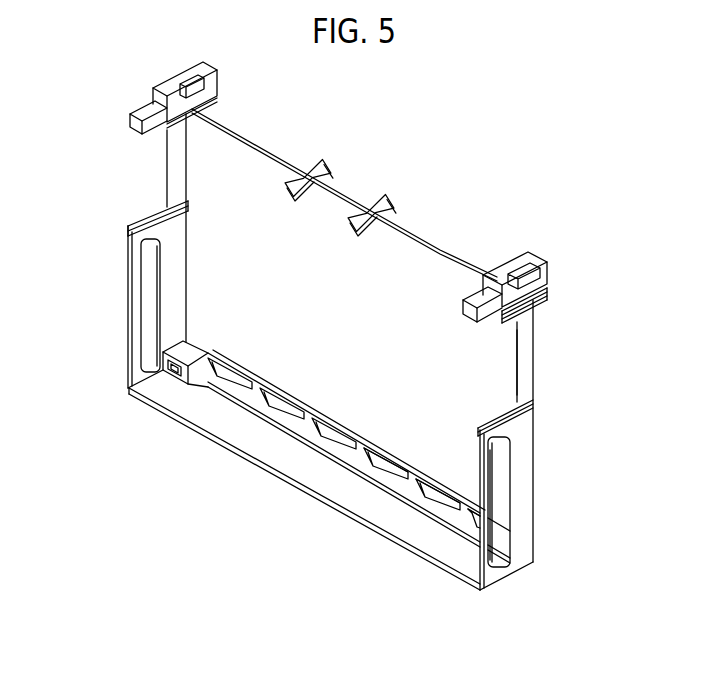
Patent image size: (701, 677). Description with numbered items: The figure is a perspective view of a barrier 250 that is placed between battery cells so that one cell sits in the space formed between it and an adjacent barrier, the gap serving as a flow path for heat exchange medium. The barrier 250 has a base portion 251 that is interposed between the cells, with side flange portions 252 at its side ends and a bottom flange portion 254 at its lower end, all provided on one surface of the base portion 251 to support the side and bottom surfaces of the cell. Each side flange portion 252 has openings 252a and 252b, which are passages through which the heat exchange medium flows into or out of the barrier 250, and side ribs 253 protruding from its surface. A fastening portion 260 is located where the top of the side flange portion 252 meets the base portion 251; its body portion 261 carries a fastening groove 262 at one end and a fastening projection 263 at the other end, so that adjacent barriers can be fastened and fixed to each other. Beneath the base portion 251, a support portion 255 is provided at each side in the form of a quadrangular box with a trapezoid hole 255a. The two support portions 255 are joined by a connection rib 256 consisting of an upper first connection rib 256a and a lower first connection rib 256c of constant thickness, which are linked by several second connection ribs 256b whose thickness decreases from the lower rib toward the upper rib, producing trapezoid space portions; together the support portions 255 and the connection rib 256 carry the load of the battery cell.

The barrier 250 is at (467, 170).
The base portion 251 is at (362, 415).
The side flange portion 252 is at (123, 305).
The opening 252a is at (499, 462).
The opening 252b is at (503, 369).
The side rib 253 is at (549, 296).
The bottom flange portion 254 is at (250, 437).
The support portion 255 is at (175, 347).
The hole 255a is at (177, 368).
The connection rib 256 is at (430, 652).
The upper first connection rib 256a is at (440, 500).
The second connection rib 256b is at (413, 477).
The lower first connection rib 256c is at (463, 518).
The fastening portion 260 is at (221, 70).
The body portion 261 is at (505, 280).
The fastening groove 262 is at (549, 266).
The fastening projection 263 is at (478, 298).